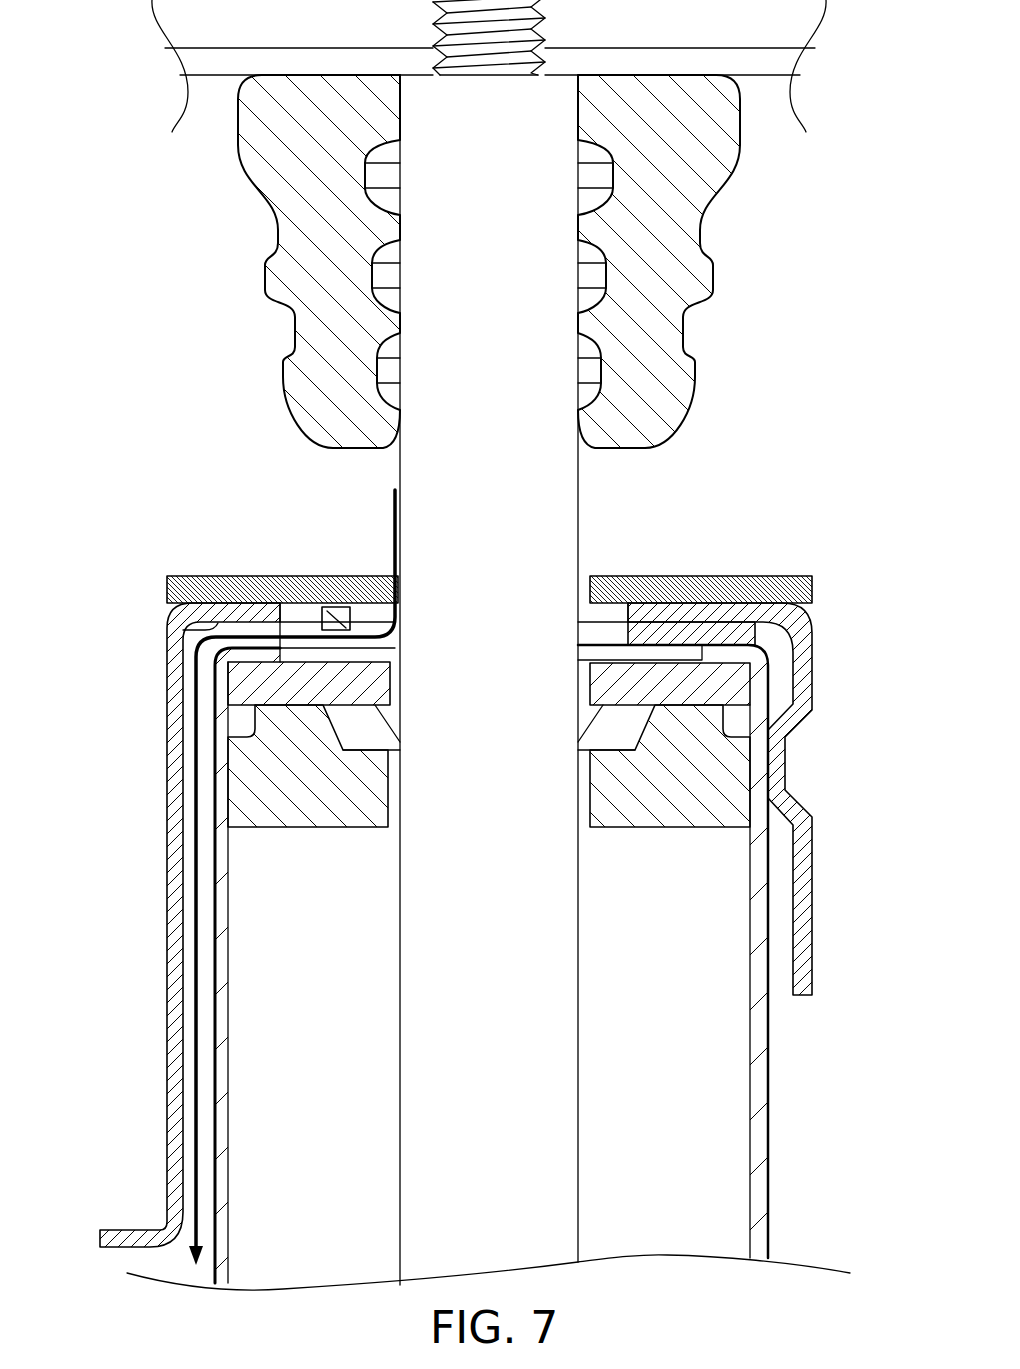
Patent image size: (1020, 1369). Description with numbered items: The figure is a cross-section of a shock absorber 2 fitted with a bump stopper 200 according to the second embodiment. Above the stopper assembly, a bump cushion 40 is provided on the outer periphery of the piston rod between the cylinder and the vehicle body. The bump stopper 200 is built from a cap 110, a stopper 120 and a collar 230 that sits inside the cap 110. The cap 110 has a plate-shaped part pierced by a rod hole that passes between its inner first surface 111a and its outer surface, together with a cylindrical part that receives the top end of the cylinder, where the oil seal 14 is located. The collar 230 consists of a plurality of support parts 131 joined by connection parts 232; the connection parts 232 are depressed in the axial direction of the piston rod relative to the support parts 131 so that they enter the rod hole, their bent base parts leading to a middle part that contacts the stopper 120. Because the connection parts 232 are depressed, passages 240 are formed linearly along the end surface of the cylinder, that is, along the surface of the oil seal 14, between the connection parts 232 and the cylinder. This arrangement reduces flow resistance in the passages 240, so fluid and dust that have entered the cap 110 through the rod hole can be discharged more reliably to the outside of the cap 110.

The shock absorber 2 is at (823, 188).
The bump cushion 40 is at (655, 212).
The bump stopper 200 is at (128, 551).
The stopper 120 is at (268, 585).
The connection part 232 is at (341, 607).
The support part 131 is at (710, 622).
The collar 230 is at (757, 632).
The first surface 111a is at (183, 630).
The passage 240 is at (228, 687).
The oil seal 14 is at (745, 707).
The cap 110 is at (168, 970).